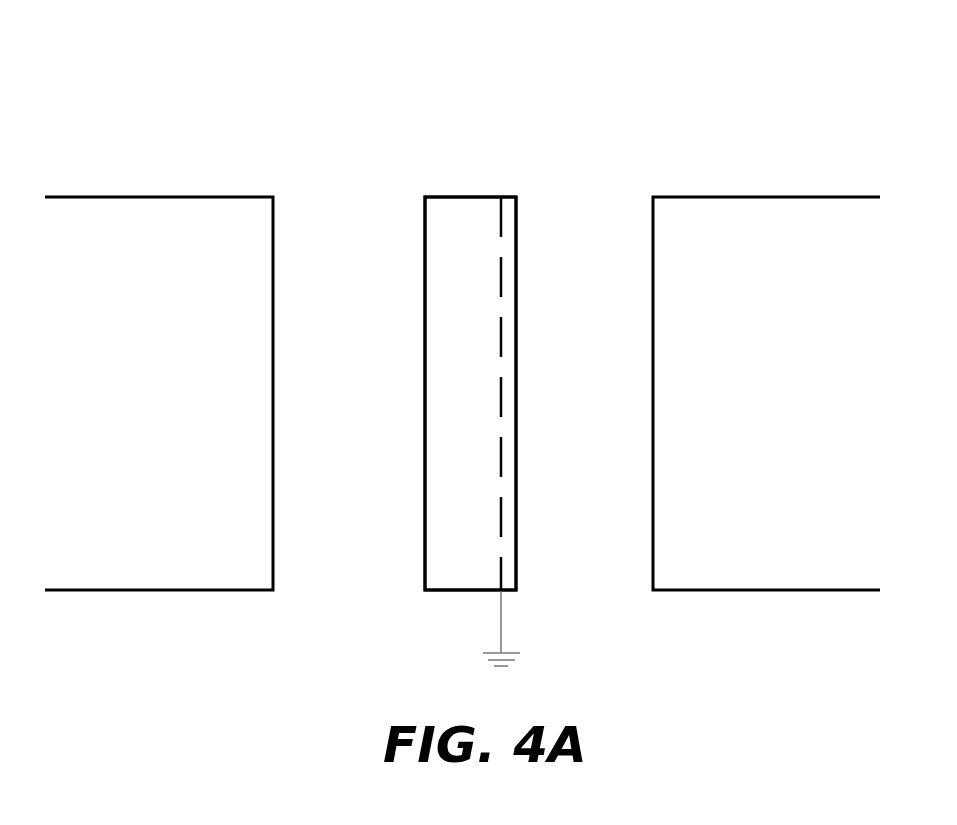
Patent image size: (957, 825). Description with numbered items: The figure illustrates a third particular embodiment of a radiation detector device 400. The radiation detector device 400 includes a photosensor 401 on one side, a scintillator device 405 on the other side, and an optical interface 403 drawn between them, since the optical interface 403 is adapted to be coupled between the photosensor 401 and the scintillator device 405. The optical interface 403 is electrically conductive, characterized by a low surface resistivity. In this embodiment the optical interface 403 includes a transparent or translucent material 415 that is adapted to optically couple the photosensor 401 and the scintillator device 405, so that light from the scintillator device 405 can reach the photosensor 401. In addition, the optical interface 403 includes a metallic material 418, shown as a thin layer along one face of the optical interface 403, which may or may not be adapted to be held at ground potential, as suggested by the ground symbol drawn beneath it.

The radiation detector device 400 is at (86, 88).
The photosensor 401 is at (180, 406).
The optical interface 403 is at (450, 172).
The scintillator device 405 is at (795, 412).
The transparent or translucent material 415 is at (484, 412).
The metallic material 418 is at (502, 517).